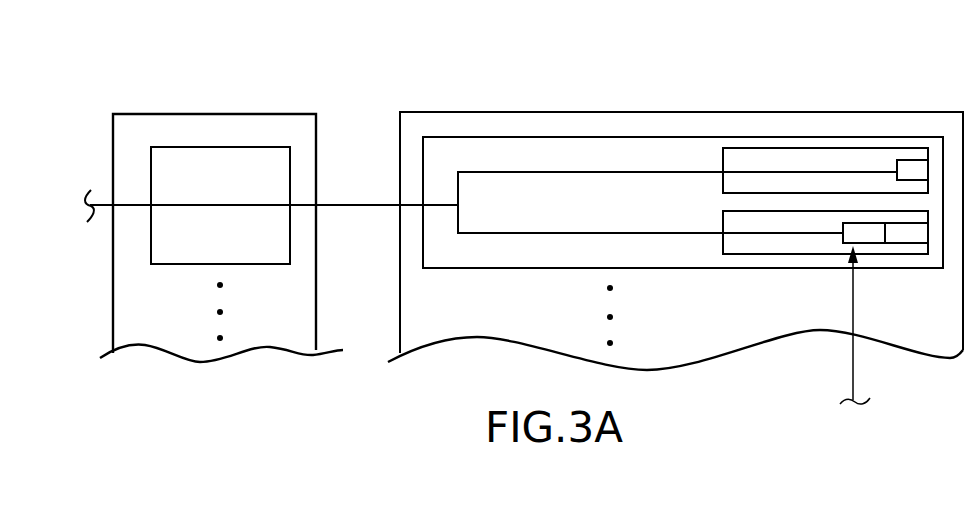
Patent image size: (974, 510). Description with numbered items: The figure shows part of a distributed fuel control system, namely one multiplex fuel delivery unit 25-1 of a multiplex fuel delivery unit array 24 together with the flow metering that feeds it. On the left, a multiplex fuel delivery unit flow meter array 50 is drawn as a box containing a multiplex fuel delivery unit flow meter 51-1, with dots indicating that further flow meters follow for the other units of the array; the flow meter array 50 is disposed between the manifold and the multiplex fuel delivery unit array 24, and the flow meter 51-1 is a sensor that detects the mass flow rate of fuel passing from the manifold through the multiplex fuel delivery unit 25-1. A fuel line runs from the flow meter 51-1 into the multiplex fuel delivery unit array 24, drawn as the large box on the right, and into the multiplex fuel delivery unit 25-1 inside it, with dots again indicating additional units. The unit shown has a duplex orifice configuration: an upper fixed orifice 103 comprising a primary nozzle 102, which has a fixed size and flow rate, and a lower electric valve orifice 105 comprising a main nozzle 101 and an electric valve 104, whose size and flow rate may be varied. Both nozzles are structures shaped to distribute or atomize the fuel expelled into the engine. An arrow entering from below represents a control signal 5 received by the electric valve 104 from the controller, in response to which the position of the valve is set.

The control signal 5 is at (853, 363).
The multiplex fuel delivery unit array 24 is at (418, 113).
The multiplex fuel delivery unit 25-1 is at (499, 138).
The multiplex fuel delivery unit flow meter array 50 is at (113, 253).
The multiplex fuel delivery unit flow meter 51-1 is at (220, 147).
The main nozzle 101 is at (913, 235).
The primary nozzle 102 is at (915, 160).
The fixed orifice 103 is at (772, 148).
The electric valve 104 is at (860, 223).
The electric valve orifice 105 is at (733, 254).